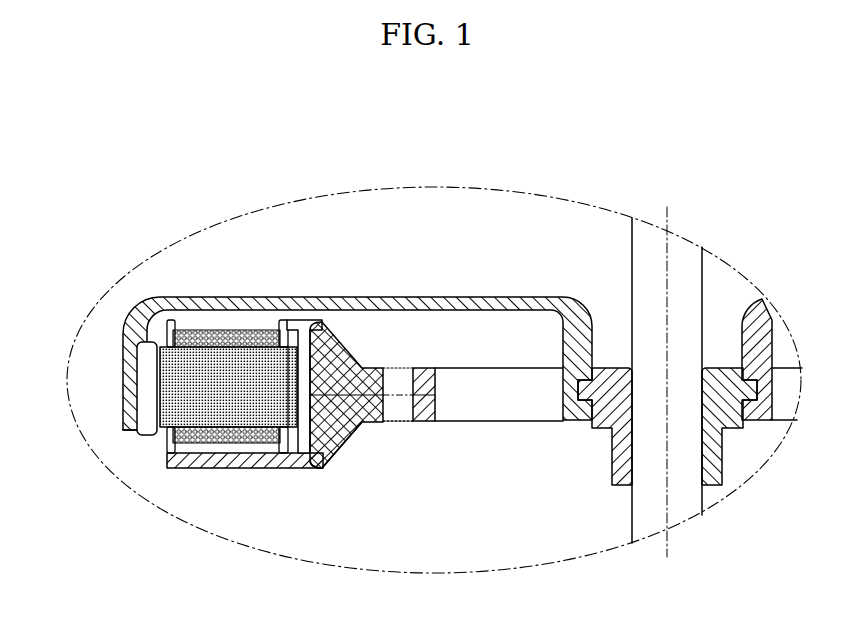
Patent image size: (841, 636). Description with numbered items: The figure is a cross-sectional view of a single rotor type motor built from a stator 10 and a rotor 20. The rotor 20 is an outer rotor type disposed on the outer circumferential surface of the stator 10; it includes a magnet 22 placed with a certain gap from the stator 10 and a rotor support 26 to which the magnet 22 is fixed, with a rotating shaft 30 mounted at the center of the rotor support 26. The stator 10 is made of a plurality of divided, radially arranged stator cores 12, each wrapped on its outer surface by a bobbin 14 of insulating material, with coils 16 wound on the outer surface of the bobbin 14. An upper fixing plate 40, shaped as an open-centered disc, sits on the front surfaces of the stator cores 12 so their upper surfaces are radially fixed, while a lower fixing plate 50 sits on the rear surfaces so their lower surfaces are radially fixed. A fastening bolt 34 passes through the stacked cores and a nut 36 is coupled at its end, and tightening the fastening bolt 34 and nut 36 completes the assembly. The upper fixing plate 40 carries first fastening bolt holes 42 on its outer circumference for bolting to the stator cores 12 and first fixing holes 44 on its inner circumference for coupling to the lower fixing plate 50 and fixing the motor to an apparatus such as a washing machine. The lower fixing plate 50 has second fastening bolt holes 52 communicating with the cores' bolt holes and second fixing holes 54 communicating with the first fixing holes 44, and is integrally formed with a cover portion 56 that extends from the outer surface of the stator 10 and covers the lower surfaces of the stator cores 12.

The stator 10 is at (215, 394).
The stator core 12 is at (233, 356).
The bobbin 14 is at (283, 322).
The coils 16 is at (193, 330).
The rotor 20 is at (117, 343).
The magnet 22 is at (150, 437).
The rotor support 26 is at (128, 433).
The rotating shaft 30 is at (703, 302).
The fastening bolt 34 is at (306, 456).
The nut 36 is at (292, 456).
The upper fixing plate 40 is at (371, 347).
The first fastening bolt holes 42 is at (352, 352).
The first fixing holes 44 is at (397, 380).
The lower fixing plate 50 is at (348, 445).
The second fastening bolt holes 52 is at (329, 470).
The second fixing holes 54 is at (399, 410).
The cover portion 56 is at (237, 470).